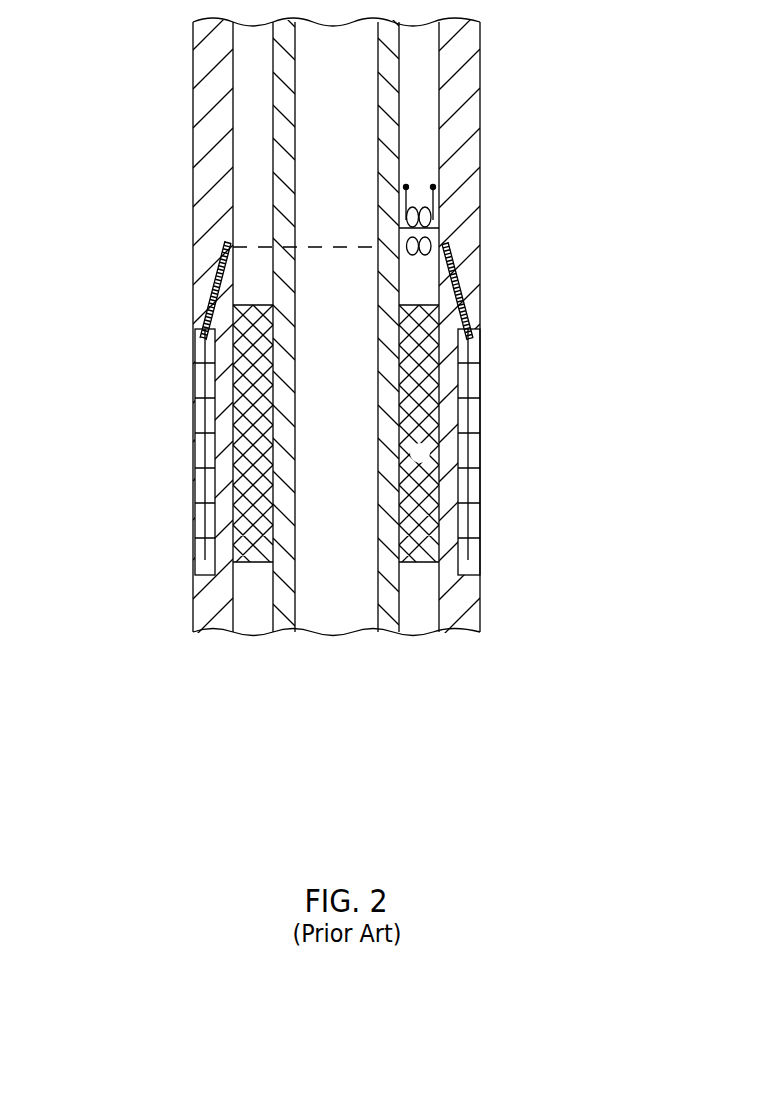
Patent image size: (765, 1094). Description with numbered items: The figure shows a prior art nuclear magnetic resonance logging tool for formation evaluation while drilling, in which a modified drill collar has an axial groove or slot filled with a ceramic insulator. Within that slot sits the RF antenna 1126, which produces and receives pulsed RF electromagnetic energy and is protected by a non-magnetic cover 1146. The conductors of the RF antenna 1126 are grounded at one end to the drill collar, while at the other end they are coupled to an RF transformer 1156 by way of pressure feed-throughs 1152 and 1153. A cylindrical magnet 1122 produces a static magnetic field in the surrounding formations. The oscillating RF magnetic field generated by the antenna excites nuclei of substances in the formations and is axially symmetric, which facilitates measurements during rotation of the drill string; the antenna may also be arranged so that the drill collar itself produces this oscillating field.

The cylindrical magnet 1122 is at (253, 540).
The RF antenna 1126 is at (208, 467).
The non-magnetic cover 1146 is at (198, 383).
The pressure feed-through 1152 is at (463, 298).
The pressure feed-through 1153 is at (212, 298).
The RF transformer 1156 is at (399, 256).